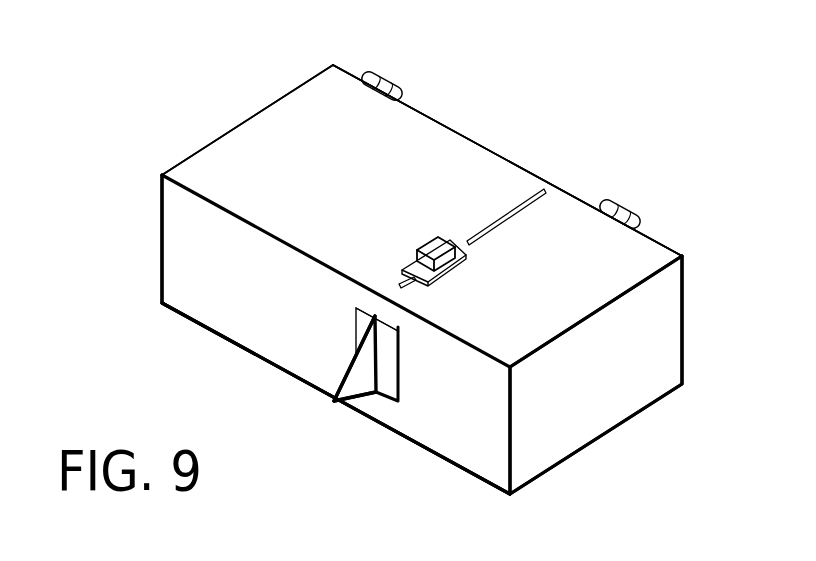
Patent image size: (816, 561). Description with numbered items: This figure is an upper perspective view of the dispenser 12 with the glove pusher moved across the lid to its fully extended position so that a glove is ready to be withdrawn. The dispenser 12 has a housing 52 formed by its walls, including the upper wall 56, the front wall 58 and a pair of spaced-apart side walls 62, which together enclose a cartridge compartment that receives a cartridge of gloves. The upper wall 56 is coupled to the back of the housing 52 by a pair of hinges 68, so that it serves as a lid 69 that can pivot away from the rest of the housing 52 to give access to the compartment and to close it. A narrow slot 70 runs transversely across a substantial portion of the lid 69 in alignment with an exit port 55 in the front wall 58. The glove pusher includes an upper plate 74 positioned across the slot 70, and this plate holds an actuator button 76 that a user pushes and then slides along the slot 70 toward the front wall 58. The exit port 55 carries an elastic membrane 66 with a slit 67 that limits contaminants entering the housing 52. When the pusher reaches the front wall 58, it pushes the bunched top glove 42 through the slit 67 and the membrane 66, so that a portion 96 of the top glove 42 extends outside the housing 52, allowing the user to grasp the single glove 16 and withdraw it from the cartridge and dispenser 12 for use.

The dispenser 12 is at (283, 100).
The housing 52 is at (208, 147).
The upper wall 56 is at (415, 128).
The lid 69 is at (485, 175).
The front wall 58 is at (203, 312).
The side walls 62 is at (643, 385).
The exit port 55 is at (336, 400).
The hinges 68 is at (380, 75).
The slot 70 is at (484, 236).
The upper plate 74 is at (410, 266).
The actuator button 76 is at (435, 246).
The elastic membrane 66 is at (400, 350).
The slit 67 is at (358, 318).
The glove 16 is at (334, 400).
The top glove 42 is at (357, 357).
The portion of the top glove 96 is at (358, 404).